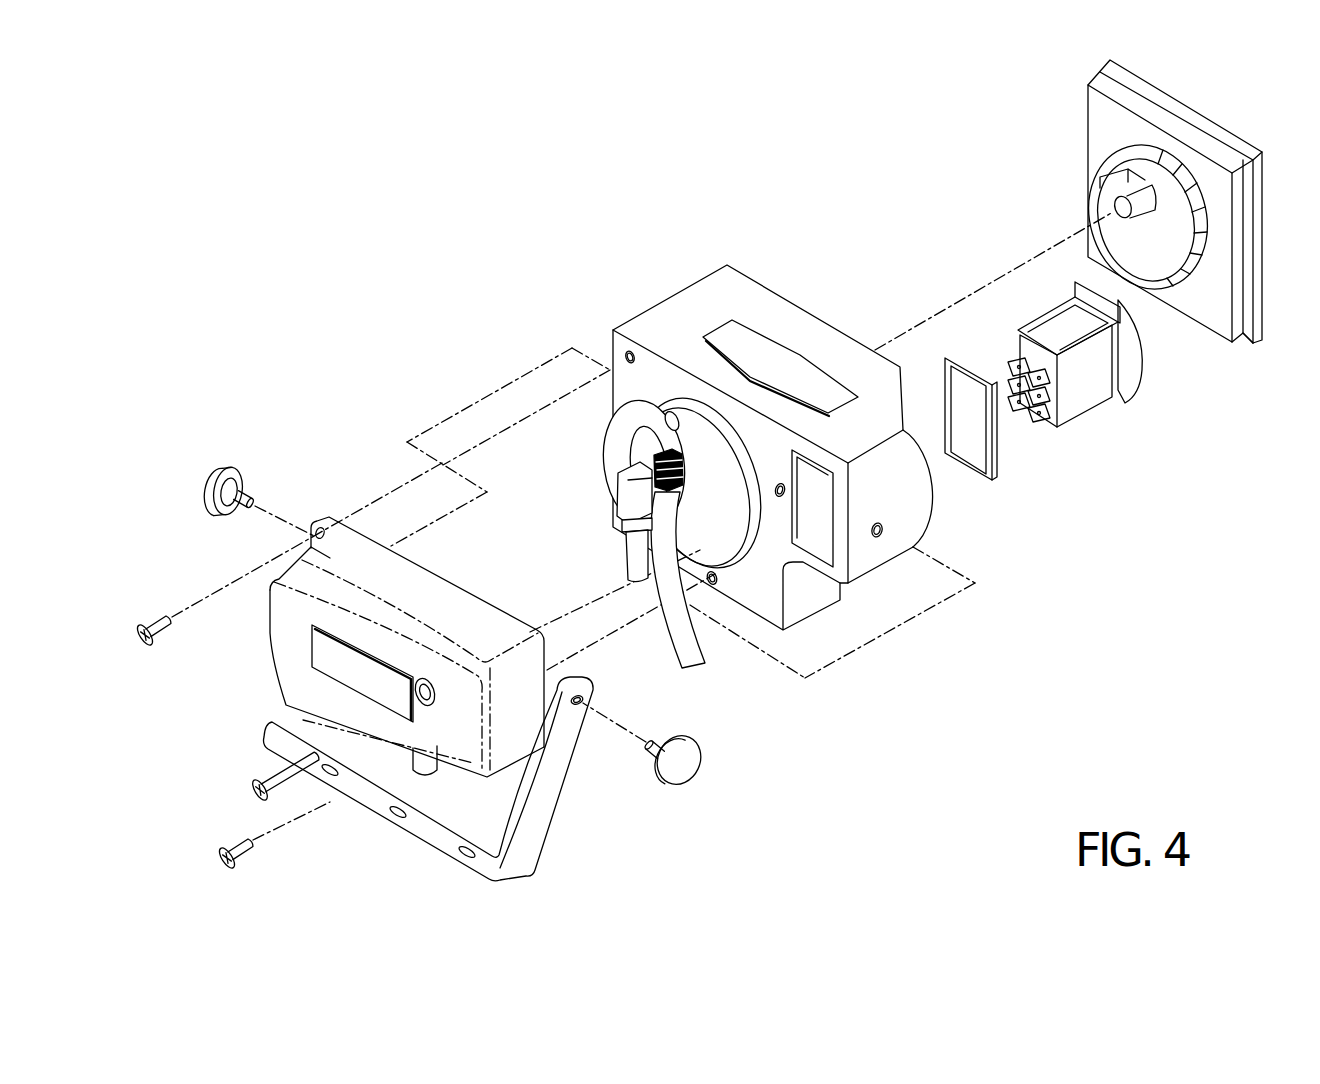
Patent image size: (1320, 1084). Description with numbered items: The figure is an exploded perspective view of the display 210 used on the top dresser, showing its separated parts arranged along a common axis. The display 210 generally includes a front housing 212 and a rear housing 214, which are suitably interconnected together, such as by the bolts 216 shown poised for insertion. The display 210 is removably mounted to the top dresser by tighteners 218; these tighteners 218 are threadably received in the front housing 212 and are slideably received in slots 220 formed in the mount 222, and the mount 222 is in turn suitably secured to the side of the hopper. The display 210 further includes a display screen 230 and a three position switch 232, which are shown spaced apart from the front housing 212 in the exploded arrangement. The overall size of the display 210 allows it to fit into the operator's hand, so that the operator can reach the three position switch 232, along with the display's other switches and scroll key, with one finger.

The display 210 is at (452, 298).
The front housing 212 is at (672, 297).
The rear housing 214 is at (327, 522).
The bolts 216 is at (287, 767).
The tighteners 218 is at (209, 484).
The slots 220 is at (584, 699).
The mount 222 is at (530, 856).
The display screen 230 is at (1197, 118).
The three position switch 232 is at (1082, 397).